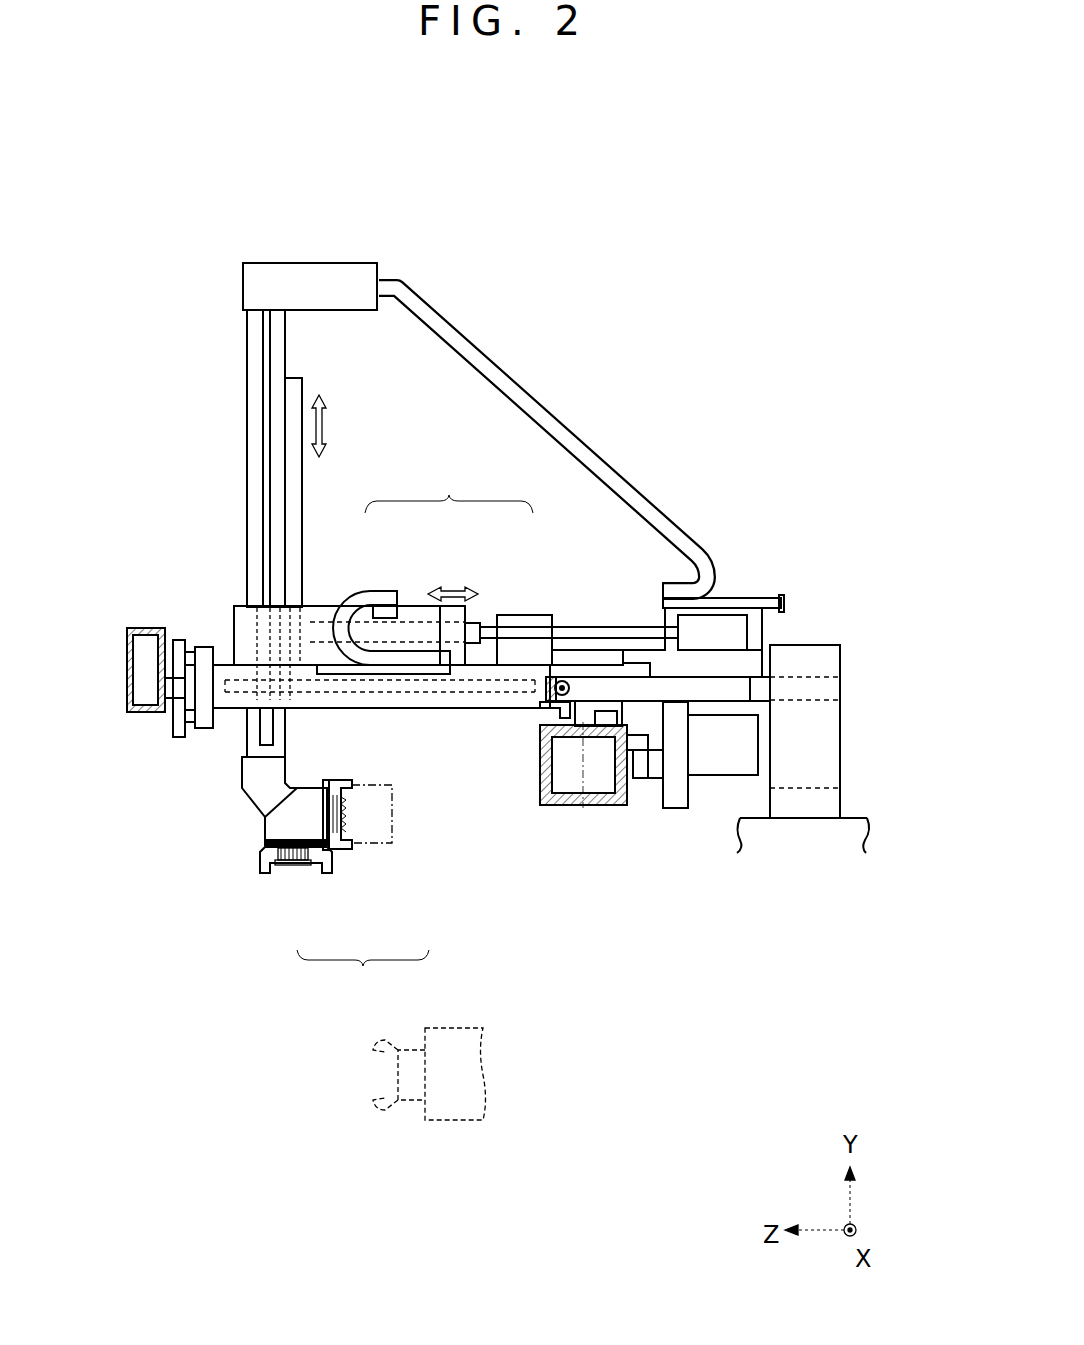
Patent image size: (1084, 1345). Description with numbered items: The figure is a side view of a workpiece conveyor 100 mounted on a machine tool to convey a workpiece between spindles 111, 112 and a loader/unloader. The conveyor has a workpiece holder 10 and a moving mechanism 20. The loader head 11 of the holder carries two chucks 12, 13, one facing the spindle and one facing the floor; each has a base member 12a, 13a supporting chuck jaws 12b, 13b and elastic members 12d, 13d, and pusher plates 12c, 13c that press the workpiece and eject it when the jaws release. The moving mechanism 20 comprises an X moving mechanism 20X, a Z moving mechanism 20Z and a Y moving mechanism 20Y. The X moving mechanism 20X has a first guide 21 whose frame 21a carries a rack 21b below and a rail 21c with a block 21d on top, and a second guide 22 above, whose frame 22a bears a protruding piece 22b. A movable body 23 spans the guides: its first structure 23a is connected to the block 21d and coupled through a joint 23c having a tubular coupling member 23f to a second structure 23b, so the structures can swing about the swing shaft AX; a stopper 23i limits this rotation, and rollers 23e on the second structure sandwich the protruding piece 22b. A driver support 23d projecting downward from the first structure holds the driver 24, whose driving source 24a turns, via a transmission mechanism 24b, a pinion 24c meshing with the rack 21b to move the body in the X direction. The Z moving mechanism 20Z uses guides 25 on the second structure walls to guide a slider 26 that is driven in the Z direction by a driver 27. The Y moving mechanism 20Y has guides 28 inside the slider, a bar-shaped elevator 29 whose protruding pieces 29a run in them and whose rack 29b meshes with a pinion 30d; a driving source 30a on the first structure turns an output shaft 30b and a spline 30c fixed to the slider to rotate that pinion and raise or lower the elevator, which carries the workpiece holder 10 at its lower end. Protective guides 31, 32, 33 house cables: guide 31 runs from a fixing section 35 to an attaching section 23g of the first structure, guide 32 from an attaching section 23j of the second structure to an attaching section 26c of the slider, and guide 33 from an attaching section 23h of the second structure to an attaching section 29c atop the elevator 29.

The workpiece holder 10 is at (335, 876).
The loader head 11 is at (315, 835).
The chuck 12 is at (307, 878).
The base member 12a is at (265, 842).
The chuck jaws 12b is at (262, 868).
The pusher plate 12c is at (282, 865).
The elastic member 12d is at (292, 862).
The chuck 13 is at (364, 862).
The base member 13a is at (324, 790).
The chuck jaws 13b is at (370, 768).
The pusher plate 13c is at (348, 805).
The elastic member 13d is at (347, 827).
The moving mechanism 20 is at (726, 454).
The X moving mechanism 20X is at (778, 540).
The Y moving mechanism 20Y is at (230, 370).
The Z moving mechanism 20Z is at (394, 474).
The first guide 21 is at (563, 816).
The frame 21a is at (632, 780).
The rack 21b is at (636, 727).
The rail 21c is at (605, 715).
The block 21d is at (560, 663).
The second guide 22 is at (124, 708).
The frame 22a is at (147, 628).
The protruding piece 22b is at (170, 700).
The movable body 23 is at (449, 490).
The first structure 23a is at (537, 618).
The second structure 23b is at (453, 657).
The joint 23c is at (478, 623).
The driver support 23d is at (675, 798).
The rollers 23e is at (178, 642).
The coupling member 23f is at (553, 700).
The attaching section 23g is at (765, 688).
The attaching section 23h is at (762, 600).
The stopper 23i is at (545, 716).
The attaching section 23j is at (318, 665).
The driver 24 is at (760, 737).
The driving source 24a is at (730, 755).
The transmission mechanism 24b is at (640, 778).
The pinion 24c is at (655, 770).
The guides 25 is at (350, 690).
The slider 26 is at (333, 612).
The attaching section 26c is at (387, 618).
The driver 27 is at (555, 598).
The guides 28 is at (243, 623).
The elevator 29 is at (252, 350).
The protruding pieces 29a is at (266, 410).
The rack 29b is at (297, 388).
The attaching section 29c is at (270, 278).
The driving source 30a is at (727, 630).
The output shaft 30b is at (653, 630).
The spline 30c is at (545, 690).
The pinion 30d is at (255, 625).
The protective guide 31 is at (832, 656).
The protective guide 32 is at (368, 592).
The protective guide 33 is at (548, 412).
The fixing section 35 is at (840, 818).
The workpiece conveyor 100 is at (772, 211).
The spindle 111 is at (410, 1100).
The spindle 112 is at (455, 1112).
The swing shaft AX is at (555, 765).